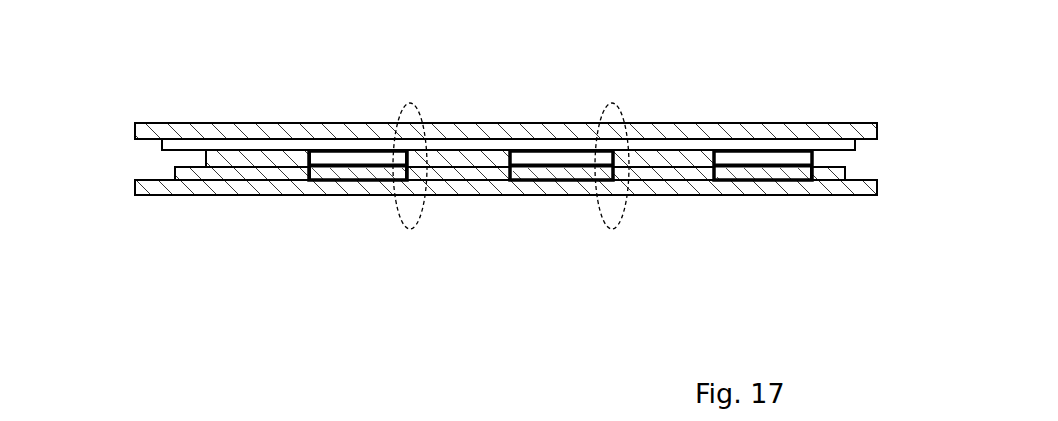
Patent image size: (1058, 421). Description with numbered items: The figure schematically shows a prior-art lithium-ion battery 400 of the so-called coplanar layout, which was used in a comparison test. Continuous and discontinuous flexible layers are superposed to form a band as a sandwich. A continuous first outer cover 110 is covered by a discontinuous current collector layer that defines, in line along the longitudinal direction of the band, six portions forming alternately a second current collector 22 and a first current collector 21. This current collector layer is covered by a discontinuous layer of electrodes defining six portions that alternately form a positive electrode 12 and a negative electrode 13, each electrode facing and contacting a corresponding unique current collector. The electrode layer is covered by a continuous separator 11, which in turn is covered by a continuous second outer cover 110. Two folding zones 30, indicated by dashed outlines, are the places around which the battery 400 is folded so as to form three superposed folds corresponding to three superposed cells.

The lithium-ion battery 400 is at (125, 68).
The outer cover 110 is at (878, 131).
The separator 11 is at (163, 147).
The positive electrode 12 is at (250, 162).
The negative electrode 13 is at (342, 162).
The first current collector 21 is at (343, 173).
The second current collector 22 is at (247, 173).
The folding zone 30 is at (418, 112).